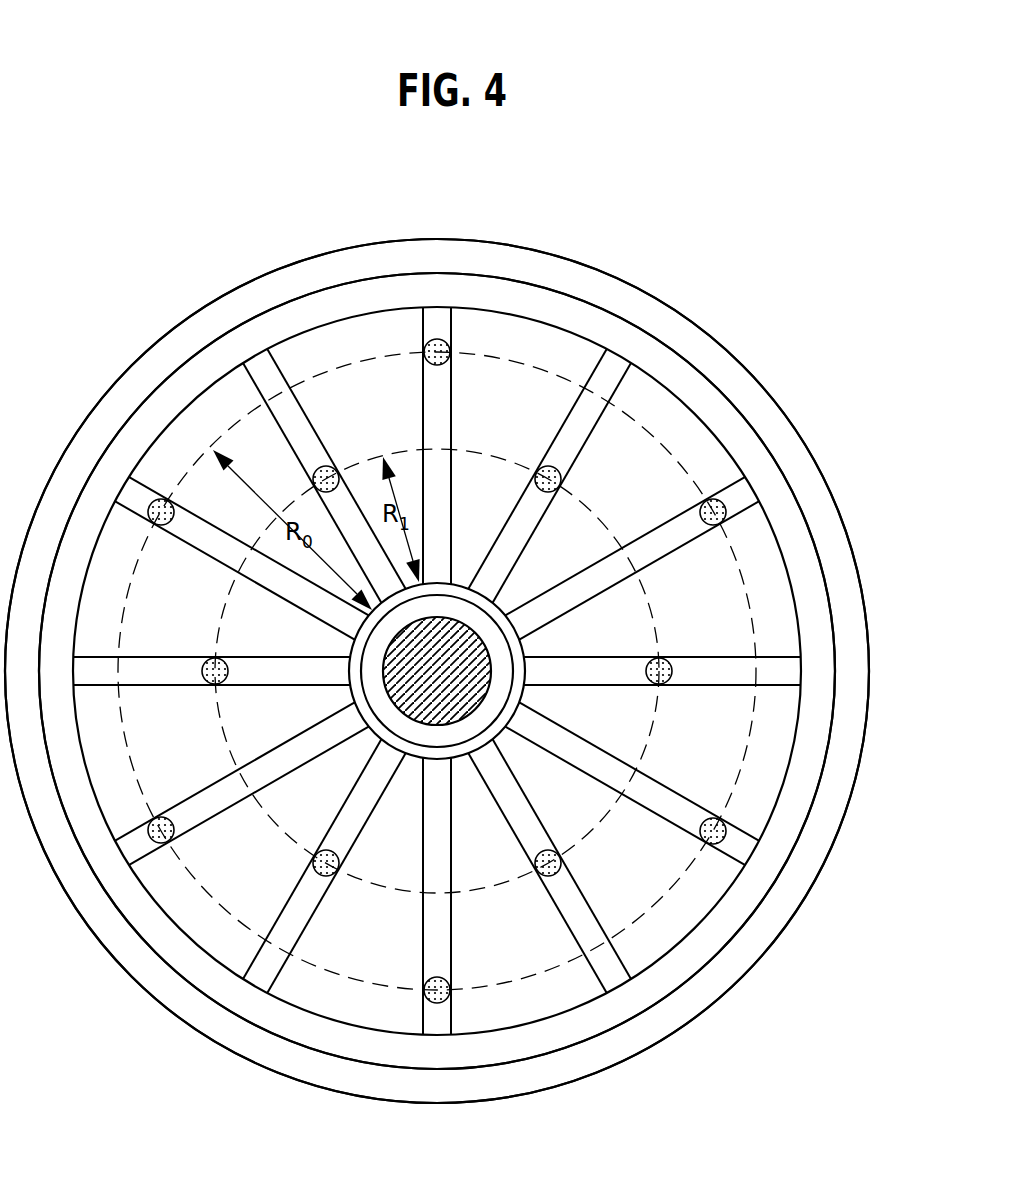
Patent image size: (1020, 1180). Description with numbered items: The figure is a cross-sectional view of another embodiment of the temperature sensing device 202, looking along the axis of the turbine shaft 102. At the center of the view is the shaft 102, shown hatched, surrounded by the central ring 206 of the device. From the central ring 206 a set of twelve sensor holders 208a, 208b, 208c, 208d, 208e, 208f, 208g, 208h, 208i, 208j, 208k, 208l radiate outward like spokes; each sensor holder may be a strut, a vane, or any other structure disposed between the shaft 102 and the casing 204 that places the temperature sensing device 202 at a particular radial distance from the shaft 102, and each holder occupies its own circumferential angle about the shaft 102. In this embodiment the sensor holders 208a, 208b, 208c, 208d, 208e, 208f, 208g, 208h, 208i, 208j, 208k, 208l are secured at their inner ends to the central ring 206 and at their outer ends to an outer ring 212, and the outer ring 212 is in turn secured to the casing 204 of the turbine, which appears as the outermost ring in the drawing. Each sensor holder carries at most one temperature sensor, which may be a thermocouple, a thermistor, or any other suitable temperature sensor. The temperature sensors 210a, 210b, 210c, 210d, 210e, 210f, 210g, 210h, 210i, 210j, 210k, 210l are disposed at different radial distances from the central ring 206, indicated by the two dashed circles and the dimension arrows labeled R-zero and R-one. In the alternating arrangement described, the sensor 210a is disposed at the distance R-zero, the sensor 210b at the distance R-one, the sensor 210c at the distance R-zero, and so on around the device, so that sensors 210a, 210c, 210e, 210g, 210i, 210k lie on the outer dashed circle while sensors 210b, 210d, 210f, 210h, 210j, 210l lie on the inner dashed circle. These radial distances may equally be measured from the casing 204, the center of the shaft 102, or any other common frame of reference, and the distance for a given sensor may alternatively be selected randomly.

The shaft 102 is at (460, 700).
The temperature sensing device 202 is at (277, 182).
The casing 204 is at (365, 1087).
The central ring 206 is at (462, 758).
The sensor holder 208a is at (447, 1015).
The sensor holder 208b is at (613, 952).
The sensor holder 208c is at (745, 845).
The sensor holder 208d is at (790, 675).
The sensor holder 208e is at (745, 492).
The sensor holder 208f is at (622, 390).
The sensor holder 208g is at (431, 340).
The sensor holder 208h is at (272, 388).
The sensor holder 208i is at (137, 500).
The sensor holder 208j is at (98, 678).
The sensor holder 208k is at (147, 848).
The sensor holder 208l is at (258, 975).
The temperature sensor 210a is at (450, 988).
The temperature sensor 210b is at (562, 862).
The temperature sensor 210c is at (724, 824).
The temperature sensor 210d is at (668, 680).
The temperature sensor 210e is at (721, 519).
The temperature sensor 210f is at (562, 478).
The temperature sensor 210g is at (451, 355).
The temperature sensor 210h is at (314, 476).
The temperature sensor 210i is at (165, 525).
The temperature sensor 210j is at (224, 681).
The temperature sensor 210k is at (174, 834).
The temperature sensor 210l is at (337, 871).
The outer ring 212 is at (542, 1035).